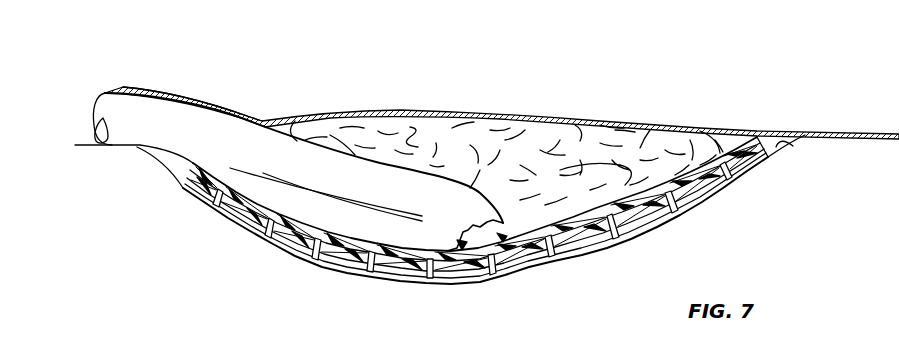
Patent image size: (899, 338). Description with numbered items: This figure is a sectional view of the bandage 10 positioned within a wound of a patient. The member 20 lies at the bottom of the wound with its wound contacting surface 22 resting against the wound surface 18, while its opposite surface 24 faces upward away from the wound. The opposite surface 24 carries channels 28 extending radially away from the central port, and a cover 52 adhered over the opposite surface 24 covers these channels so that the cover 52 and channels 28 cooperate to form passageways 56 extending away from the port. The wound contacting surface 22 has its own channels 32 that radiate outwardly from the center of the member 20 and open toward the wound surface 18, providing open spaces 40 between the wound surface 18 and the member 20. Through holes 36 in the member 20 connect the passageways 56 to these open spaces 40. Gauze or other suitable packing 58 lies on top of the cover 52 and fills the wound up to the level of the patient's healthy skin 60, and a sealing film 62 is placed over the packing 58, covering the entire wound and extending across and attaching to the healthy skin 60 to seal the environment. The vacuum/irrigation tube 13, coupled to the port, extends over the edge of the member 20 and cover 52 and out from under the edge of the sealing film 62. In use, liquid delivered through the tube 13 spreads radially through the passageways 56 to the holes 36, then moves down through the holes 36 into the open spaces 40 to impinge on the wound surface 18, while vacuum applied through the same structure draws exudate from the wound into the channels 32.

The bandage 10 is at (779, 108).
The vacuum/irrigation tube 13 is at (112, 107).
The wound surface 18 is at (782, 147).
The member 20 is at (187, 160).
The wound contacting surface 22 is at (463, 185).
The opposite surface 24 is at (353, 240).
The channels 28 is at (735, 153).
The channels 32 is at (580, 258).
The through holes 36 is at (262, 205).
The open spaces 40 is at (343, 263).
The cover 52 is at (693, 170).
The passageways 56 is at (192, 161).
The packing 58 is at (603, 133).
The healthy skin 60 is at (84, 144).
The sealing film 62 is at (843, 128).